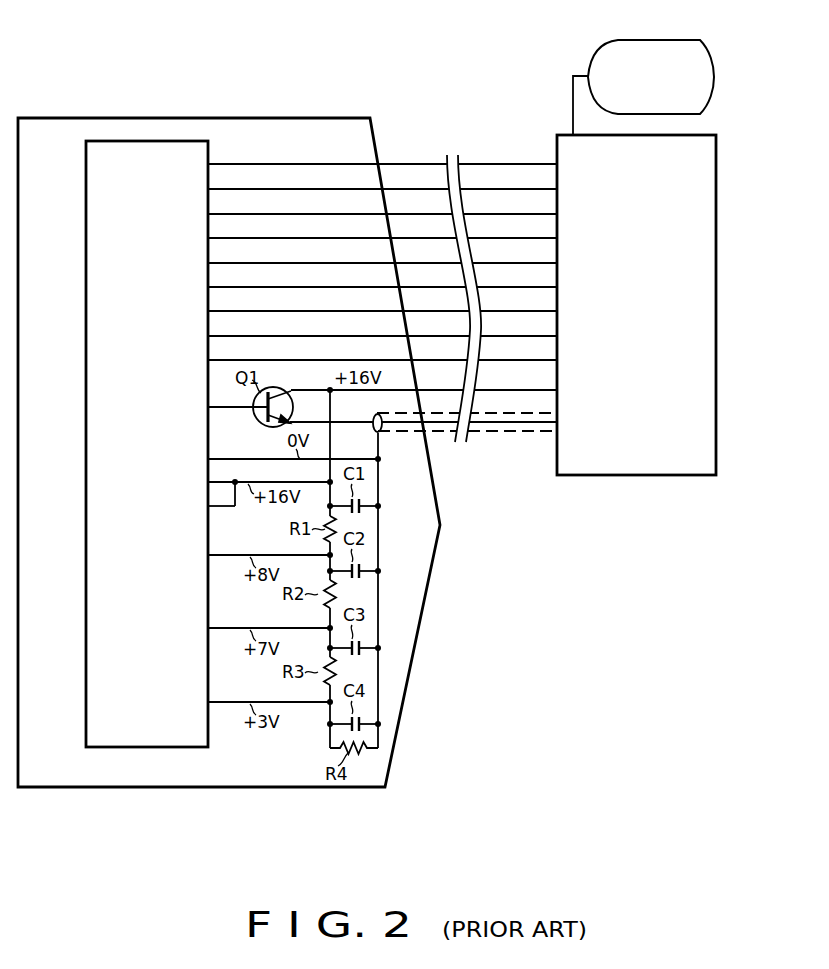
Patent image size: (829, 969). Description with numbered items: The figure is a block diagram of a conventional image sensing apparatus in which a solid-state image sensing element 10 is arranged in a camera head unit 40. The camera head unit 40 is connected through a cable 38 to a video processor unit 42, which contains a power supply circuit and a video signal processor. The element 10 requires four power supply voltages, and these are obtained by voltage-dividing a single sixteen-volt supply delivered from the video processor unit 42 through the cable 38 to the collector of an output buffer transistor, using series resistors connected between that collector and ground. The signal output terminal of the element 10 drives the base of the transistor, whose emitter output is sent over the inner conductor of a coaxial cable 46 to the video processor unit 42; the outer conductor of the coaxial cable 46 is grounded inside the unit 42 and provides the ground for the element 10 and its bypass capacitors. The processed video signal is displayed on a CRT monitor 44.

The solid-state image sensing element 10 is at (86, 304).
The cable 38 is at (495, 160).
The camera head unit 40 is at (198, 118).
The video processor unit 42 is at (632, 478).
The CRT monitor 44 is at (649, 40).
The coaxial cable 46 is at (509, 432).